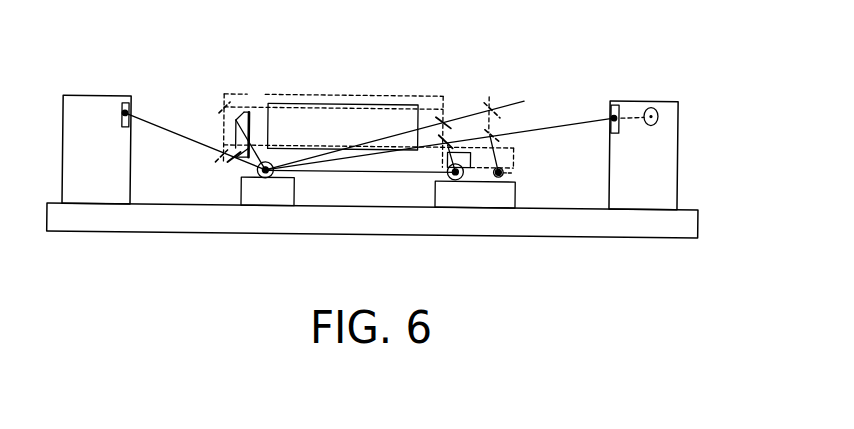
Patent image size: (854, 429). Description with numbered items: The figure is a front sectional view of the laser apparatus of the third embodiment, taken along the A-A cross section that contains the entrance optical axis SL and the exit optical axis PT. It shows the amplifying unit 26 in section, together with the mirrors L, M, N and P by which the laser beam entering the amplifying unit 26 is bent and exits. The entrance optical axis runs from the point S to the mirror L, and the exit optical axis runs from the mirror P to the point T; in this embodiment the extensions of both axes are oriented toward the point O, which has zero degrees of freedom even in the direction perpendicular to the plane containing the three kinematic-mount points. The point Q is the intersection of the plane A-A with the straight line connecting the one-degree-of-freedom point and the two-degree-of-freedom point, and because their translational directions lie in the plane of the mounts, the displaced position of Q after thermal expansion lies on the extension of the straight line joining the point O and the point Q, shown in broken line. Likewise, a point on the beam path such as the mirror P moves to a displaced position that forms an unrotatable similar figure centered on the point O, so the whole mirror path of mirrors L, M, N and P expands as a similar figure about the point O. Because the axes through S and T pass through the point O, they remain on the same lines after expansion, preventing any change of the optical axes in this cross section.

The amplifying unit 26 is at (368, 101).
The entrance optical axis point S is at (103, 149).
The exit optical axis point T is at (633, 155).
The mirror M is at (240, 121).
The mirror L is at (220, 169).
The point O is at (267, 179).
The mirror N is at (468, 109).
The mirror P is at (474, 150).
The point Q is at (479, 183).